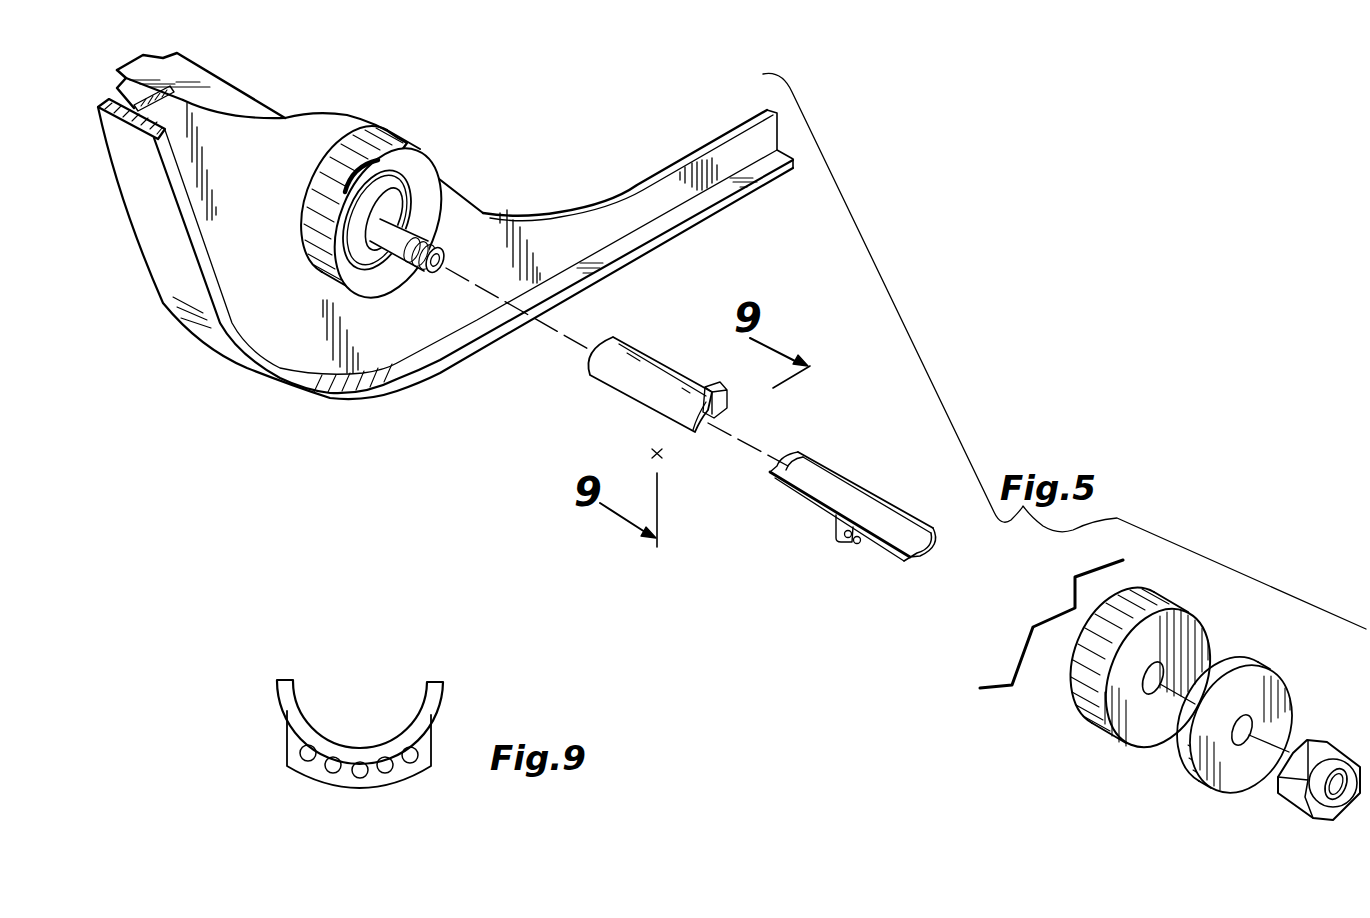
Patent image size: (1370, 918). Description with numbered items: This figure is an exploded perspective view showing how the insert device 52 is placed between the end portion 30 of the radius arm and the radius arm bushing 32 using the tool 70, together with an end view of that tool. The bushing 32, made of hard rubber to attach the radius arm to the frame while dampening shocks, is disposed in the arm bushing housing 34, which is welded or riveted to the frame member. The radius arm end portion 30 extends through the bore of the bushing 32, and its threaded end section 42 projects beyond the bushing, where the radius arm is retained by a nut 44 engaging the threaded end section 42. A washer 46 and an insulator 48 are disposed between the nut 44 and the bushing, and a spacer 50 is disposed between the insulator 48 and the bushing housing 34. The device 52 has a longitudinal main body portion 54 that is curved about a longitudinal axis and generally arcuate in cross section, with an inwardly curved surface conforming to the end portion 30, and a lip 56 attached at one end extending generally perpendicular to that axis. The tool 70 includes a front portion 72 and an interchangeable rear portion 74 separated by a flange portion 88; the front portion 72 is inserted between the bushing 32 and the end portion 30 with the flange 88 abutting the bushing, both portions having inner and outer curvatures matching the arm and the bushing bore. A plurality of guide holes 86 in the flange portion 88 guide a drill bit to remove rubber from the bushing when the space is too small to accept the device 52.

In FIG. 5, the end portion 30 is at (437, 169).
In FIG. 5, the radius arm bushing 32 is at (392, 193).
In FIG. 5, the arm bushing housing 34 is at (433, 371).
In FIG. 5, the threaded end section 42 is at (437, 245).
In FIG. 5, the nut 44 is at (1323, 740).
In FIG. 5, the washer 46 is at (1266, 674).
In FIG. 5, the insulator 48 is at (1190, 633).
In FIG. 5, the spacer 50 is at (320, 268).
In FIG. 5, the device 52 is at (662, 374).
In FIG. 5, the main body portion 54 is at (652, 396).
In FIG. 5, the lip 56 is at (723, 392).
In FIG. 5, the tool 70 is at (834, 530).
In FIG. 9, the tool 70 is at (374, 754).
In FIG. 5, the front portion 72 is at (797, 497).
In FIG. 9, the front portion 72 is at (280, 690).
In FIG. 5, the rear portion 74 is at (878, 547).
In FIG. 9, the guide holes 86 is at (383, 773).
In FIG. 5, the flange portion 88 is at (835, 529).
In FIG. 9, the flange portion 88 is at (421, 762).